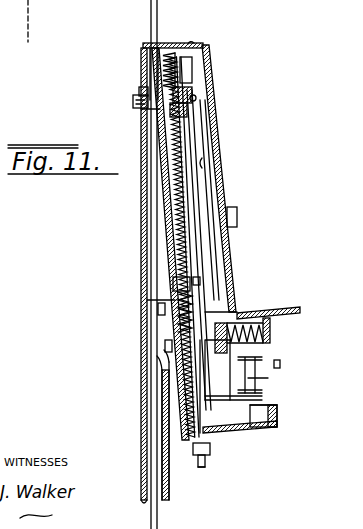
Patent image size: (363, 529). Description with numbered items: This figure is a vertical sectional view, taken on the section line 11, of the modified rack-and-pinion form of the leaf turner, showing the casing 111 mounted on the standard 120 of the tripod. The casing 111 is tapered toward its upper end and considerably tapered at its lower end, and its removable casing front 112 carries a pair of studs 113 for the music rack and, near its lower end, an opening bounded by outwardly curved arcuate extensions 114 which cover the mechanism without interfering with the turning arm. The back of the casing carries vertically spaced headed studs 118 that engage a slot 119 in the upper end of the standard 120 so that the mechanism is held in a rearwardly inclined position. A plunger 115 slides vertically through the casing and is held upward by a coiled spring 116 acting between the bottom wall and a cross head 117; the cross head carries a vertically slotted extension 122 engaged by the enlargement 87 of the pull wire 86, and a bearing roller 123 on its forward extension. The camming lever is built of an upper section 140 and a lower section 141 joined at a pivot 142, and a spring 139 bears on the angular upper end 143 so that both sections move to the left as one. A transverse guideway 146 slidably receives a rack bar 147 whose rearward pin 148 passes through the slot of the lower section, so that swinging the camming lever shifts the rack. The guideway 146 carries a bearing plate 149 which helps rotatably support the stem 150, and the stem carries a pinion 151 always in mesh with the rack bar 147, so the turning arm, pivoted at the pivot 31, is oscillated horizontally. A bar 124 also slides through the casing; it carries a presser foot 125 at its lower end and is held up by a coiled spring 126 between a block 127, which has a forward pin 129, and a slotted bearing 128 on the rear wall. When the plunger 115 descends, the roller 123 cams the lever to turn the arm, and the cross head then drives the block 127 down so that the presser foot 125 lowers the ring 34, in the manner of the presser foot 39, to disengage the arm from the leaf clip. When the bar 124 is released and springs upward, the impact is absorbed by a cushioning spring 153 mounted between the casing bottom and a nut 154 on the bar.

The section line 11 is at (28, 42).
The bar 124 is at (151, 38).
The casing 111 is at (147, 62).
The enlargement 87 is at (139, 88).
The vertically slotted extension 122 is at (133, 101).
The cross head 117 is at (145, 111).
The spring 139 is at (190, 56).
The bearing roller 123 is at (190, 92).
The angular upper end 143 is at (185, 110).
The casing front 112 is at (215, 135).
The upper section 140 is at (196, 150).
The pivot 142 is at (204, 163).
The lower section 141 is at (210, 200).
The pull wire 86 is at (160, 184).
The studs 113 is at (237, 214).
The coiled spring 116 is at (176, 225).
The block 127 is at (190, 280).
The pin 129 is at (200, 281).
The slot 119 is at (172, 296).
The headed studs 118 is at (158, 306).
The slotted bearing 128 is at (165, 352).
The coiled spring 126 is at (232, 305).
The bearing plate 149 is at (260, 312).
The arcuate extensions 114 is at (270, 320).
The pinion 151 is at (272, 330).
The rack bar 147 is at (262, 340).
The guideway 146 is at (250, 368).
The pivot 31 is at (280, 364).
The ring 34 is at (268, 378).
The pin 148 is at (246, 392).
The presser foot 39 is at (262, 398).
The stem 150 is at (277, 410).
The standard 120 is at (141, 420).
The cushioning spring 153 is at (162, 447).
The nut 154 is at (210, 452).
The presser foot 125 is at (240, 433).
The plunger 115 is at (203, 467).